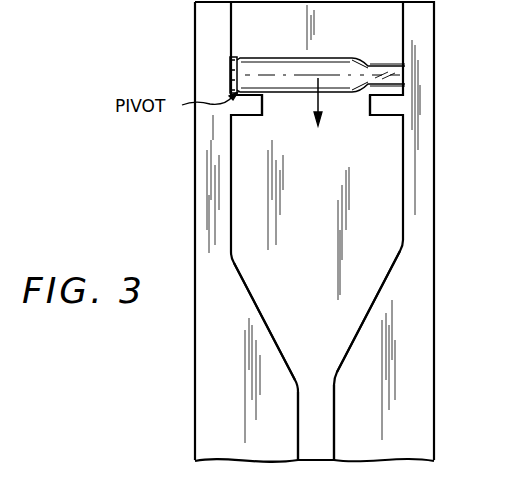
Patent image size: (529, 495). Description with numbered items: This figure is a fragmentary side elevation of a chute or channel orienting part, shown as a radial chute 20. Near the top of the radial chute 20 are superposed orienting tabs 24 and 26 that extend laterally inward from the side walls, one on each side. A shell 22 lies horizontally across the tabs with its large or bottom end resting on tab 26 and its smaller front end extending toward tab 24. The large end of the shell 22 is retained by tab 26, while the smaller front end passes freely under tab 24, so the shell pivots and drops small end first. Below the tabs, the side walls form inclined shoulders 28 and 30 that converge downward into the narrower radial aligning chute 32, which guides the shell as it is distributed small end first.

The radial chute 20 is at (427, 183).
The shell 22 is at (338, 69).
The orienting tab 24 is at (393, 102).
The orienting tab 26 is at (248, 100).
The inclined shoulder 28 is at (268, 323).
The inclined shoulder 30 is at (390, 273).
The radial aligning chute 32 is at (327, 419).